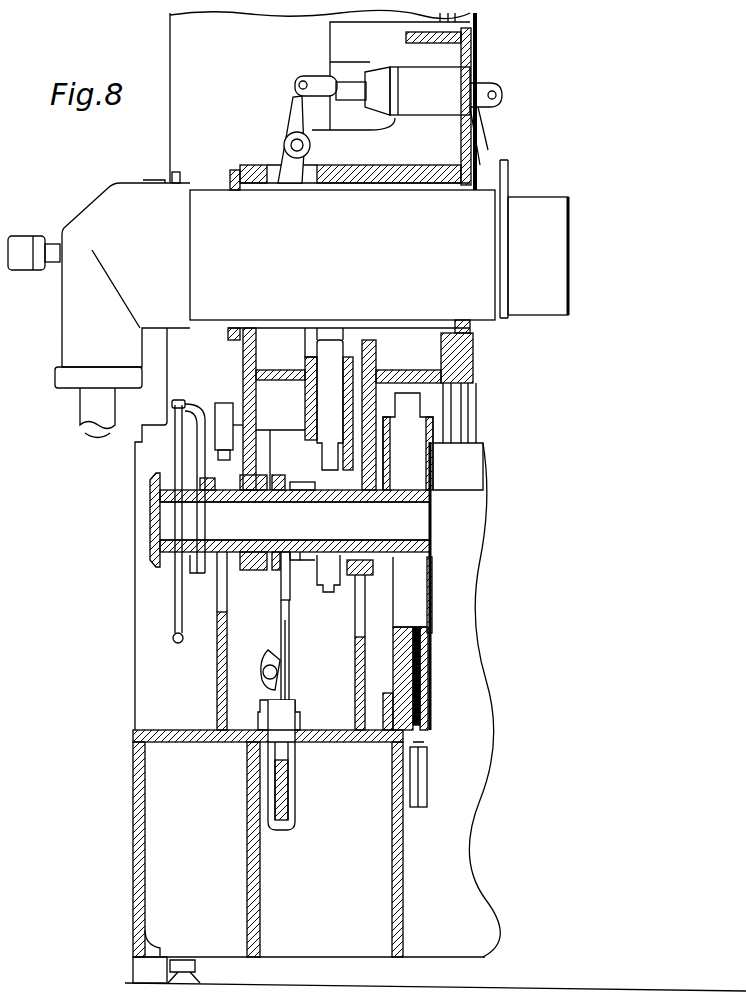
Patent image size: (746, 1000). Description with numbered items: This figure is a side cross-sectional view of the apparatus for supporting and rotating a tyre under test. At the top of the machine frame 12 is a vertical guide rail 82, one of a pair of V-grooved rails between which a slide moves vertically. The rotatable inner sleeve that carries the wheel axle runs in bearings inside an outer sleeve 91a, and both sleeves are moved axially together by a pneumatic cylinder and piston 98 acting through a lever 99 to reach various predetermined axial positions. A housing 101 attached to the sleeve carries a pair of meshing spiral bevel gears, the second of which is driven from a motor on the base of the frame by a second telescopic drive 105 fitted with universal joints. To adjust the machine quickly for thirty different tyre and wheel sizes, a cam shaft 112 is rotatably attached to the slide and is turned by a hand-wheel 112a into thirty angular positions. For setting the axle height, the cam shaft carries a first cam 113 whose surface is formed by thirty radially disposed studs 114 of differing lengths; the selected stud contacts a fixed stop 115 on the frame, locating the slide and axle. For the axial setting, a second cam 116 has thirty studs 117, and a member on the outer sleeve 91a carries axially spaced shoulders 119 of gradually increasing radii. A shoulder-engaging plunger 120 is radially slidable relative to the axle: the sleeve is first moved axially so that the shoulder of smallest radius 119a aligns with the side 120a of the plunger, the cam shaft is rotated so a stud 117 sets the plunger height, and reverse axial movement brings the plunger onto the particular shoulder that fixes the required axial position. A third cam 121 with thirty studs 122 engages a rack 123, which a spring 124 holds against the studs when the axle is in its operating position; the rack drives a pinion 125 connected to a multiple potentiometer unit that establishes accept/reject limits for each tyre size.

The machine frame 12 is at (402, 854).
The vertical guide rail 82 is at (462, 404).
The outer sleeve 91a is at (415, 328).
The pneumatic cylinder and piston 98 is at (452, 82).
The lever 99 is at (296, 107).
The housing 101 is at (102, 196).
The second telescopic drive 105 is at (90, 420).
The cam shaft 112 is at (362, 548).
The hand-wheel 112a is at (184, 642).
The first cam 113 is at (452, 580).
The studs 114 is at (410, 462).
The fixed stop 115 is at (420, 648).
The second cam 116 is at (313, 330).
The studs 117 is at (305, 478).
The shoulders 119 is at (340, 338).
The shoulder of smallest radius 119a is at (328, 338).
The shoulder-engaging plunger 120 is at (345, 350).
The side of the plunger 120a is at (336, 352).
The third cam 121 is at (292, 560).
The studs 122 is at (282, 592).
The rack 123 is at (290, 635).
The spring 124 is at (296, 783).
The pinion 125 is at (266, 668).